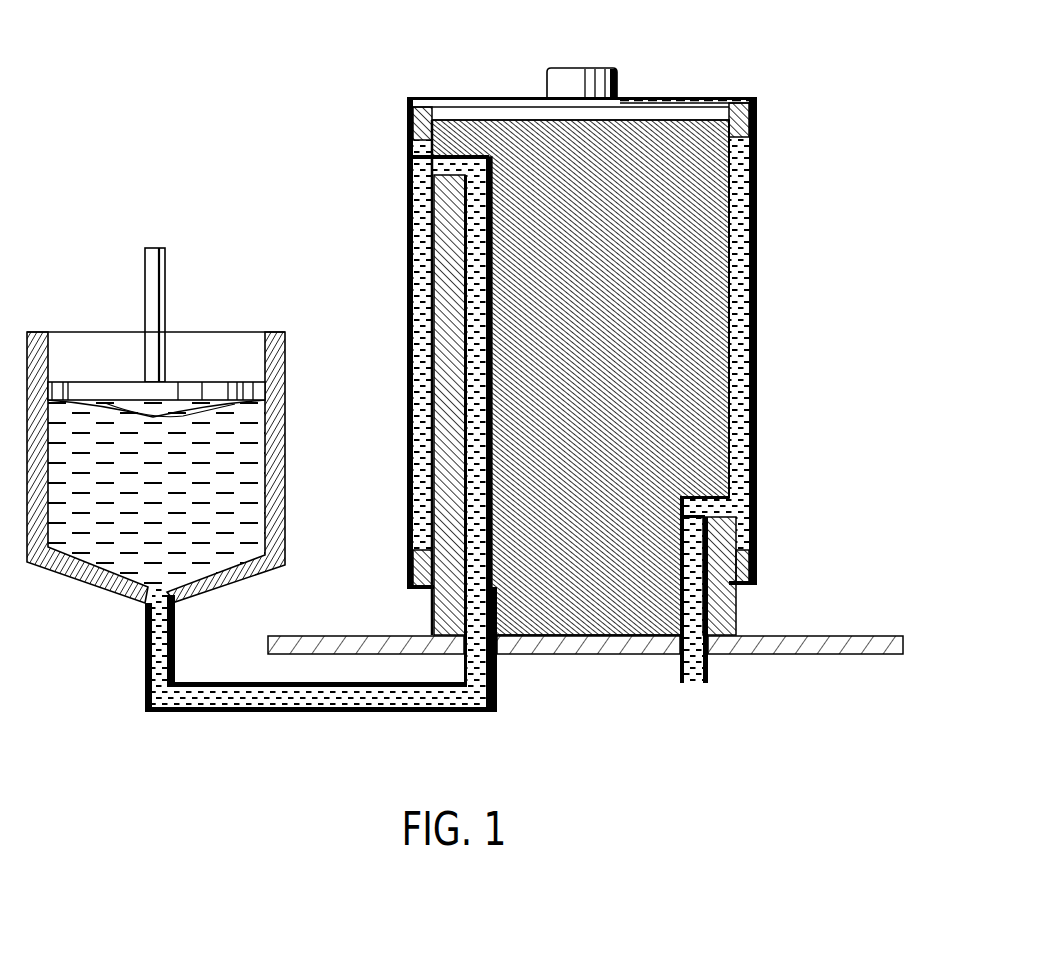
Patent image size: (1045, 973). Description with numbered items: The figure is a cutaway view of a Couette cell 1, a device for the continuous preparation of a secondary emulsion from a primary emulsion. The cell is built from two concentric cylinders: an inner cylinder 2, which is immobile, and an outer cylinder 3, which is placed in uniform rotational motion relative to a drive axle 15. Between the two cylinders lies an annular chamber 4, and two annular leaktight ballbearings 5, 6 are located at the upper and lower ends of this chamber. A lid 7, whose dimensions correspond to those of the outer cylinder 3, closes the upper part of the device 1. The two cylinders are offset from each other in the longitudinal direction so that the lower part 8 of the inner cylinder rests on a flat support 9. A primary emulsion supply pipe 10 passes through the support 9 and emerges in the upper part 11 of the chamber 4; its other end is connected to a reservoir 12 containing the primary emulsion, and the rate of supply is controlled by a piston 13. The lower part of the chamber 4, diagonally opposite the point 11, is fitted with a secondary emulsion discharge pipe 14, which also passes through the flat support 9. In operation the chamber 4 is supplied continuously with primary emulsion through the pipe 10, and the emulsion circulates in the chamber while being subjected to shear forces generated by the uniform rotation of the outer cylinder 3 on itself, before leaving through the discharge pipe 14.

The Couette cell 1 is at (402, 186).
The inner cylinder 2 is at (409, 283).
The outer cylinder 3 is at (408, 308).
The annular chamber 4 is at (408, 216).
The annular leaktight ballbearing 5 is at (739, 97).
The annular leaktight ballbearing 6 is at (757, 571).
The lid 7 is at (664, 98).
The lower part of the inner cylinder 8 is at (725, 620).
The flat support 9 is at (272, 657).
The primary emulsion supply pipe 10 is at (353, 712).
The upper part of the chamber 11 is at (408, 157).
The reservoir 12 is at (290, 461).
The piston 13 is at (166, 318).
The secondary emulsion discharge pipe 14 is at (710, 660).
The drive axle 15 is at (618, 89).